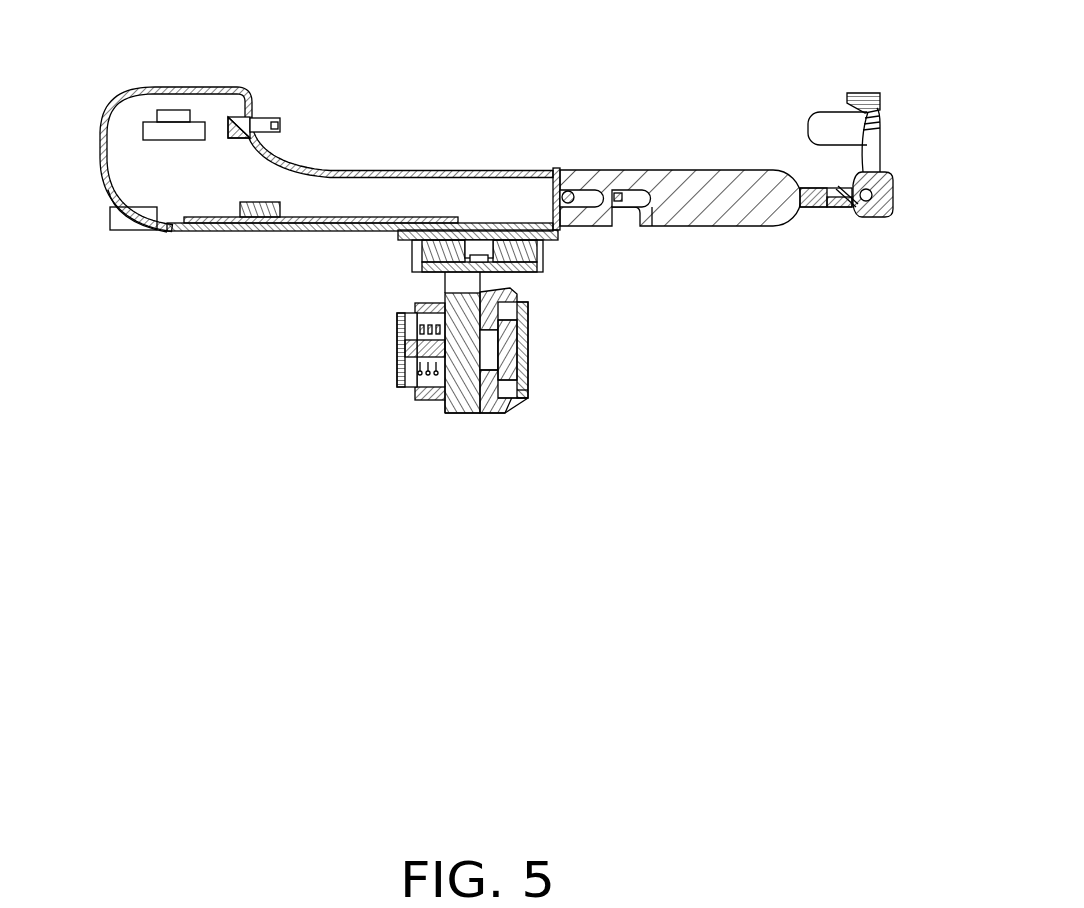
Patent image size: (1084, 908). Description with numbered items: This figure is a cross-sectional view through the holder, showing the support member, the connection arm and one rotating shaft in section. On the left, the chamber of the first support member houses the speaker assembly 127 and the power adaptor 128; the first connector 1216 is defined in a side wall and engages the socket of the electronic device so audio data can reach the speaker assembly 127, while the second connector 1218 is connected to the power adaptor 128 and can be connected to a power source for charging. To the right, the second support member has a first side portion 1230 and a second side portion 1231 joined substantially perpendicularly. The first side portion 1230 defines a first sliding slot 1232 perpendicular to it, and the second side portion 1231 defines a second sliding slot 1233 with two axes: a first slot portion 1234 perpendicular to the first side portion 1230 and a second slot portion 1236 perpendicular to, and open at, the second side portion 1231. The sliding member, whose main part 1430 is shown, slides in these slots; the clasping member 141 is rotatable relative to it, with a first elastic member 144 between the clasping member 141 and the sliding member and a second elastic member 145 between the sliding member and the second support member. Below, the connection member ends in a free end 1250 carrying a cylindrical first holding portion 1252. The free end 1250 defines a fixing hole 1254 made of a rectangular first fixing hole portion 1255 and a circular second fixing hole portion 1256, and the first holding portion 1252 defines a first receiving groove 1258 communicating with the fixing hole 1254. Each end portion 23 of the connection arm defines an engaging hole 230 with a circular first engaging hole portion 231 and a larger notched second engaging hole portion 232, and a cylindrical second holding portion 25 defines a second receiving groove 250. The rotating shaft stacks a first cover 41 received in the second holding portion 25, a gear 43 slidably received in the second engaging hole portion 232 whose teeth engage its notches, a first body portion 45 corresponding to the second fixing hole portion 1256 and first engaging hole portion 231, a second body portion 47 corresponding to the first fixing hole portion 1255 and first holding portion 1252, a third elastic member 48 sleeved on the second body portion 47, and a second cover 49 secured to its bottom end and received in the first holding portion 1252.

The speaker assembly 127 is at (163, 118).
The first connector 1216 is at (267, 122).
The second connector 1218 is at (140, 212).
The power adaptor 128 is at (260, 217).
The first side portion 1230 is at (565, 172).
The clasping member 141 is at (568, 190).
The first sliding slot 1232 is at (595, 197).
The second sliding slot 1233 is at (757, 100).
The first slot portion 1234 is at (650, 185).
The second slot portion 1236 is at (652, 212).
The second elastic member 145 is at (618, 207).
The second side portion 1231 is at (735, 226).
The main part 1430 is at (812, 207).
The first elastic member 144 is at (848, 210).
The first engaging hole portion 231 is at (513, 292).
The second engaging hole portion 232 is at (512, 328).
The engaging hole 230 is at (613, 270).
The first cover 41 is at (517, 348).
The second receiving groove 250 is at (528, 370).
The gear 43 is at (527, 388).
The second holding portion 25 is at (520, 402).
The first body portion 45 is at (513, 412).
The end portion 23 is at (505, 413).
The free end 1250 is at (452, 320).
The third elastic member 48 is at (413, 315).
The second cover 49 is at (390, 348).
The first receiving groove 1258 is at (423, 383).
The first holding portion 1252 is at (423, 400).
The second body portion 47 is at (447, 417).
The first fixing hole portion 1255 is at (468, 417).
The second fixing hole portion 1256 is at (498, 417).
The fixing hole 1254 is at (557, 517).